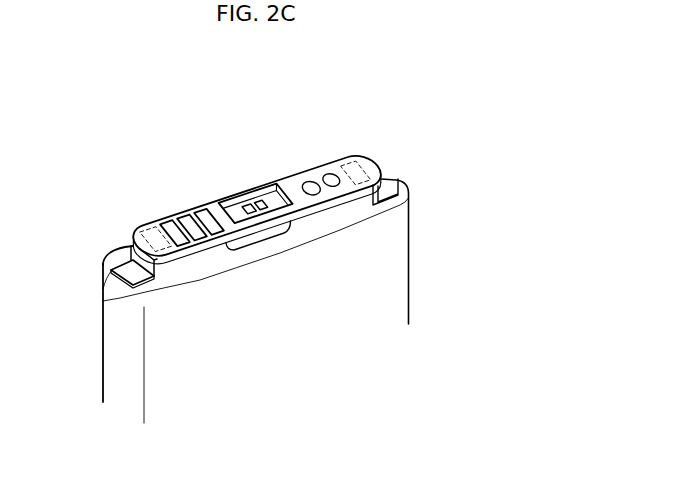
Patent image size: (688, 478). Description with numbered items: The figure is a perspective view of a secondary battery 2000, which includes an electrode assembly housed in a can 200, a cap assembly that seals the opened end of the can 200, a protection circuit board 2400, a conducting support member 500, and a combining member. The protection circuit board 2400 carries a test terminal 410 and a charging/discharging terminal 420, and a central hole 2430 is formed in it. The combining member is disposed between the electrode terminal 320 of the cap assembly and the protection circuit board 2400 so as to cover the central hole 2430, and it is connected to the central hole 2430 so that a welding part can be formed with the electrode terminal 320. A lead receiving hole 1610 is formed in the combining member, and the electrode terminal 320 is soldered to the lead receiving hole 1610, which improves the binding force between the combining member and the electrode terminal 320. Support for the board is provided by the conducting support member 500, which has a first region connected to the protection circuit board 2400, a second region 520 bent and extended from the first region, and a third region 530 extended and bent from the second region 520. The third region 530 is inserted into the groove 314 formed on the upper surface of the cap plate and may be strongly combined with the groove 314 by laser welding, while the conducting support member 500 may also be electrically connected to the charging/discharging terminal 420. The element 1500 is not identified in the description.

The secondary battery 2000 is at (91, 114).
The can 200 is at (401, 261).
The protection circuit board 2400 is at (224, 221).
The central hole 2430 is at (227, 207).
The charging/discharging terminal 420 is at (199, 211).
The card seating recess 1500 is at (280, 198).
The lead receiving hole 1610 is at (260, 203).
The test terminal 410 is at (331, 176).
The electrode terminal 320 is at (268, 243).
The conducting support member 500 is at (401, 173).
The second region 520 is at (129, 253).
The third region 530 is at (130, 273).
The groove 314 is at (122, 287).